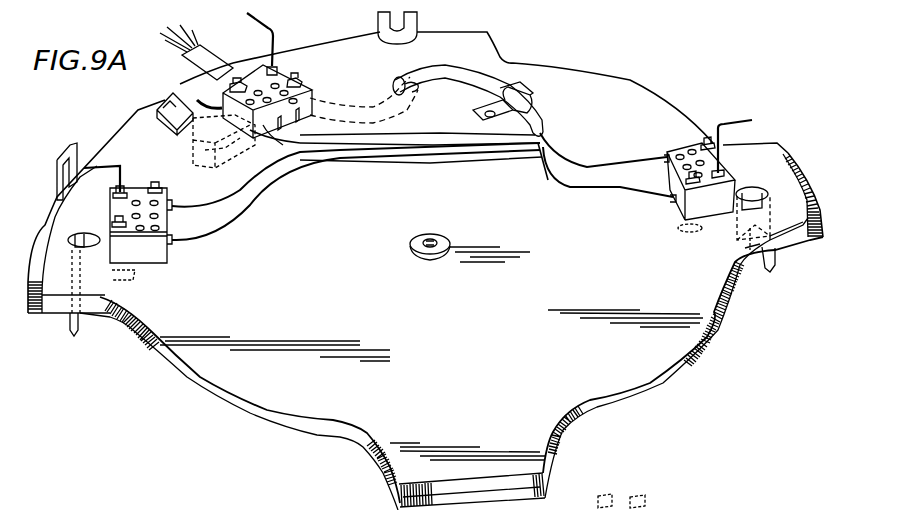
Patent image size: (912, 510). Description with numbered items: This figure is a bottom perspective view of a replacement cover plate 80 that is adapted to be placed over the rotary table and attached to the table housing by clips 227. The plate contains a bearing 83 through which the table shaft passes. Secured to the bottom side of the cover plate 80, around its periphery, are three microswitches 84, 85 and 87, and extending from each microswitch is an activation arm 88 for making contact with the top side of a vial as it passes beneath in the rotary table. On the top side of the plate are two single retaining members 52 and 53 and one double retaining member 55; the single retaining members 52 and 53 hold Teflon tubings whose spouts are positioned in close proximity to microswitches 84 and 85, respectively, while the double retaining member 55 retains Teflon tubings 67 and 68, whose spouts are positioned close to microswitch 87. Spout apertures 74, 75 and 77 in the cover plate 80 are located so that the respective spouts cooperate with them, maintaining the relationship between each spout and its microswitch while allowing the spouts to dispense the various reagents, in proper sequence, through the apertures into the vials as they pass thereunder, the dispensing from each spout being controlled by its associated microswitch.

The cover plate 80 is at (310, 398).
The single retaining member 52 is at (73, 323).
The single retaining member 53 is at (775, 263).
The clips 227 is at (60, 157).
The spout aperture 77 is at (178, 88).
The double retaining member 55 is at (213, 166).
The microswitch 87 is at (303, 67).
The activation arm 88 is at (263, 22).
The microswitch 84 is at (168, 257).
The spout aperture 74 is at (88, 235).
The microswitch 85 is at (718, 207).
The spout aperture 75 is at (748, 188).
The bearing 83 is at (445, 244).
The Teflon tubing 67 is at (598, 497).
The Teflon tubing 68 is at (648, 497).